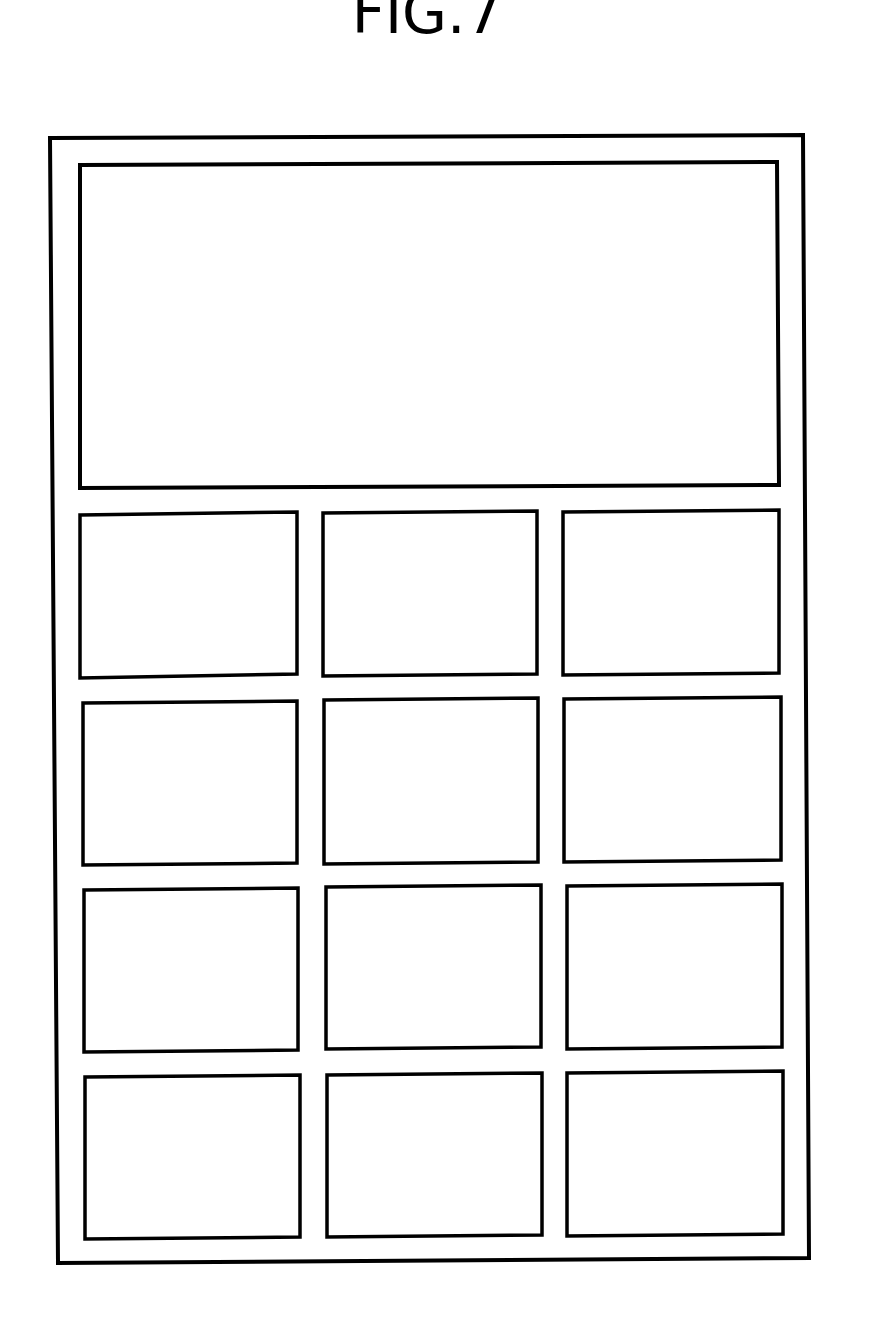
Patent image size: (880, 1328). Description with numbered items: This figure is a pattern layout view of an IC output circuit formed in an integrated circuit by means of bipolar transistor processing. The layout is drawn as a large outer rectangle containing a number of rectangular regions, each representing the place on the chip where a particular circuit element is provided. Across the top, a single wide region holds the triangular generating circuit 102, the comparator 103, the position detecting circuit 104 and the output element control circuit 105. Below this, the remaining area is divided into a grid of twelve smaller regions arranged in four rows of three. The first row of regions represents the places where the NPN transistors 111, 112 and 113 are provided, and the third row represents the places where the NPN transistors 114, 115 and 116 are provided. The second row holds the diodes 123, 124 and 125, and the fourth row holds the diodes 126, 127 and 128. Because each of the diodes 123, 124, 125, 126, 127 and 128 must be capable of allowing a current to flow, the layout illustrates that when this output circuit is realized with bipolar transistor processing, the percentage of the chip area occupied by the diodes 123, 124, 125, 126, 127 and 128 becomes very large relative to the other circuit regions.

The triangular generating circuit 102 is at (429, 325).
The comparator 103 is at (429, 325).
The position detecting circuit 104 is at (429, 325).
The output element control circuit 105 is at (429, 325).
The NPN transistor 111 is at (188, 595).
The NPN transistor 112 is at (430, 593).
The NPN transistor 113 is at (671, 592).
The NPN transistor 114 is at (191, 970).
The NPN transistor 115 is at (433, 967).
The NPN transistor 116 is at (674, 966).
The diode 123 is at (190, 783).
The diode 124 is at (431, 781).
The diode 125 is at (672, 779).
The diode 126 is at (192, 1157).
The diode 127 is at (434, 1155).
The diode 128 is at (675, 1153).